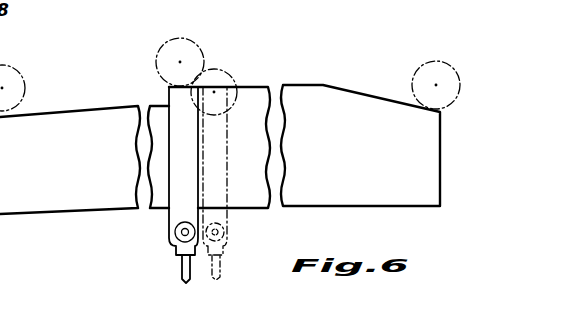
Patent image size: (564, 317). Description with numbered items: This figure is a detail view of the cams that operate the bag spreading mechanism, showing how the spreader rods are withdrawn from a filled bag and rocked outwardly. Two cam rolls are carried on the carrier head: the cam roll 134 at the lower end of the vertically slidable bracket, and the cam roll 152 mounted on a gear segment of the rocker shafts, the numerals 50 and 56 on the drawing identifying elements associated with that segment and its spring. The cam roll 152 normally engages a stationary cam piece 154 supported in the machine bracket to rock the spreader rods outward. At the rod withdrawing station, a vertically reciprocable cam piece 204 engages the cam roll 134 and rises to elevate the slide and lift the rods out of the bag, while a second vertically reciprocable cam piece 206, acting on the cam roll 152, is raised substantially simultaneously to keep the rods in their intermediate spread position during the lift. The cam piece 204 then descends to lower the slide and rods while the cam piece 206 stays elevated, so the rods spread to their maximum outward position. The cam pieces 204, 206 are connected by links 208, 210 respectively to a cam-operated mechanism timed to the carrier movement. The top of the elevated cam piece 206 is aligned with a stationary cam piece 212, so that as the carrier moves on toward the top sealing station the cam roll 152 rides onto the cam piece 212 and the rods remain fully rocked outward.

The roller 50 is at (12, 70).
The roller shaft 56 is at (11, 57).
The cam roll 152 is at (25, 73).
The stationary cam piece 154 is at (65, 110).
The cam roll 134 is at (229, 73).
The stationary cam piece 212 is at (308, 85).
The vertically reciprocable cam piece 206 is at (169, 218).
The vertically reciprocable cam piece 204 is at (229, 223).
The link 210 is at (182, 270).
The link 208 is at (221, 268).